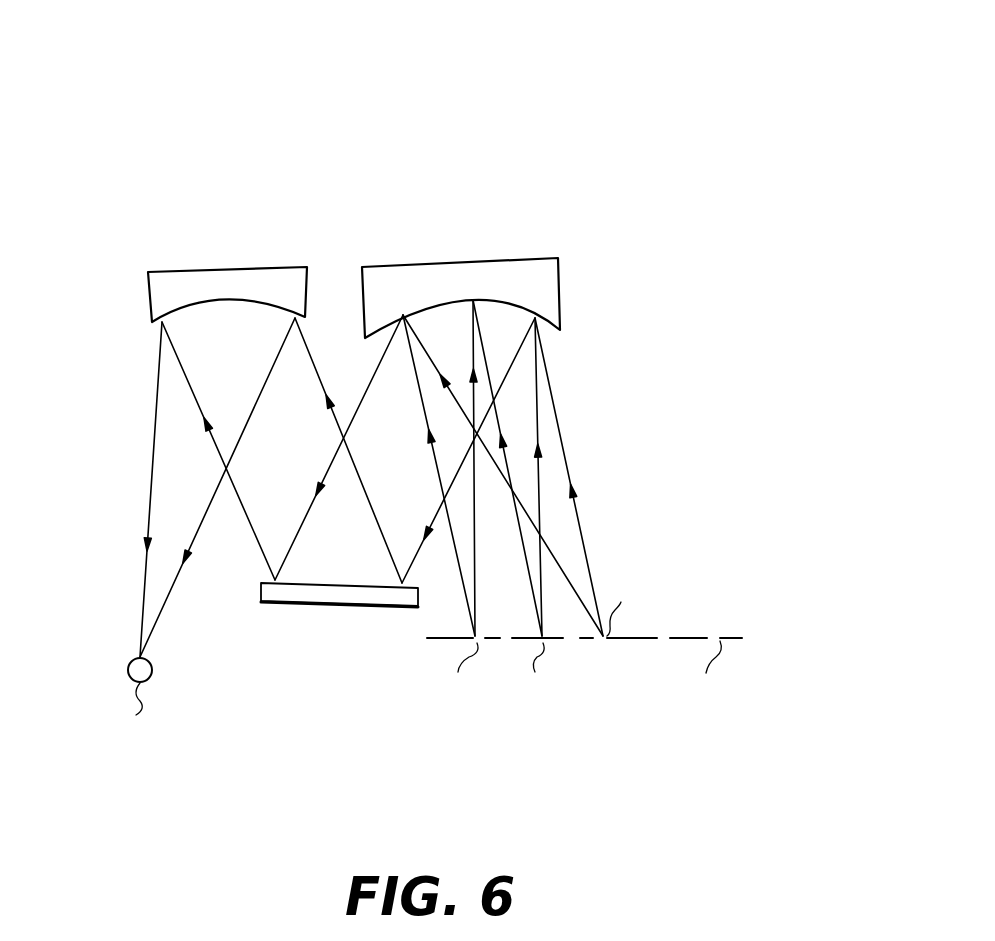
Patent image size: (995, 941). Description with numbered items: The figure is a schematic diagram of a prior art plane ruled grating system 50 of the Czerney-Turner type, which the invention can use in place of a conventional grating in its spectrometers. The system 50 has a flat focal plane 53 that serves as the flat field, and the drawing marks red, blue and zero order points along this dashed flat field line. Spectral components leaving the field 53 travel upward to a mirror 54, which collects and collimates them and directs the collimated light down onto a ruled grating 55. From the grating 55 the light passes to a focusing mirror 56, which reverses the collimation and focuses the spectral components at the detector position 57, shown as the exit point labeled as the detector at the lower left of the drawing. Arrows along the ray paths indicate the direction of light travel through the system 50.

The plane ruled grating system 50 is at (133, 122).
The flat focal plane 53 is at (742, 638).
The mirror 54 is at (505, 280).
The ruled grating 55 is at (320, 598).
The focusing mirror 56 is at (214, 280).
The detector position 57 is at (129, 660).